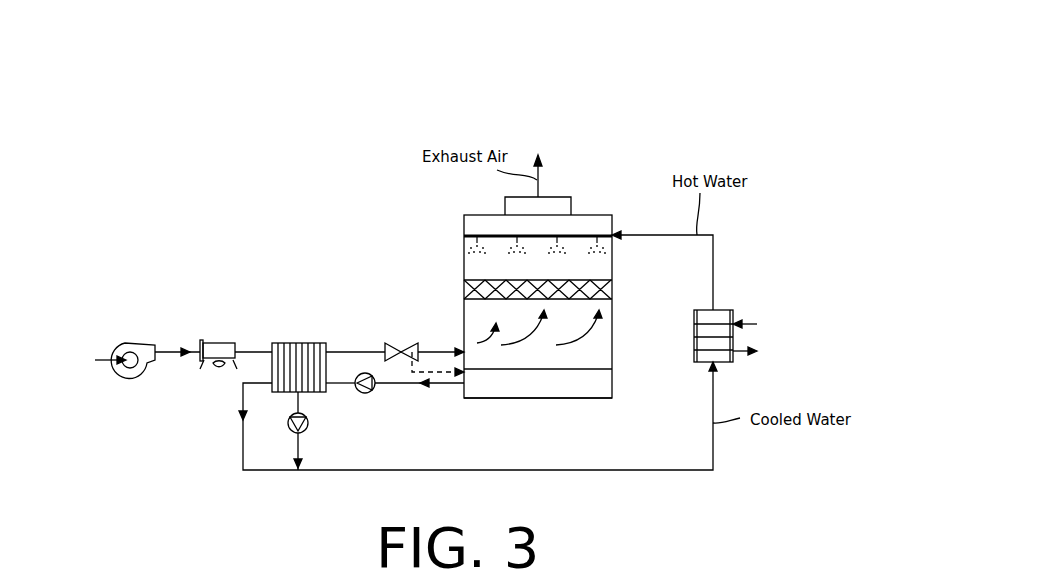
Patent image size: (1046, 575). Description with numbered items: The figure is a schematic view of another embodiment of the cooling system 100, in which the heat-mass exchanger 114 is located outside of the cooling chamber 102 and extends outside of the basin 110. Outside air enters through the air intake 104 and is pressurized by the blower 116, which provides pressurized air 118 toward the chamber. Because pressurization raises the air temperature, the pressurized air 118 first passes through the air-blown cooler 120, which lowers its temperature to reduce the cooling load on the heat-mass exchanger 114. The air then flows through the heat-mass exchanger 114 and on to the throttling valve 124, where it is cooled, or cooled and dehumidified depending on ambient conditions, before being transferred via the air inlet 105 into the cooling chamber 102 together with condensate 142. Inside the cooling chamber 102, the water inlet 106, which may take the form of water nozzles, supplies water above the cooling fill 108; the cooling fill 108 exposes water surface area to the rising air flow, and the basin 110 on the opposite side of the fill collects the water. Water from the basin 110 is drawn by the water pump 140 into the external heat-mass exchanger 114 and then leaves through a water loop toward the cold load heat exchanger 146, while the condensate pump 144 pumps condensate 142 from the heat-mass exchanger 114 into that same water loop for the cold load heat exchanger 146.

The cooling system 100 is at (470, 80).
The cooling chamber 102 is at (464, 318).
The air intake 104 is at (100, 362).
The air inlet 105 is at (430, 352).
The water inlet 106 is at (470, 237).
The cooling fill 108 is at (612, 293).
The basin 110 is at (588, 388).
The heat-mass exchanger 114 is at (282, 343).
The blower 116 is at (120, 345).
The pressurized air 118 is at (170, 350).
The air-blown cooler 120 is at (200, 361).
The throttling valve 124 is at (410, 348).
The water pump 140 is at (372, 390).
The condensate 142 is at (438, 375).
The condensate pump 144 is at (308, 422).
The cold load heat exchanger 146 is at (728, 310).